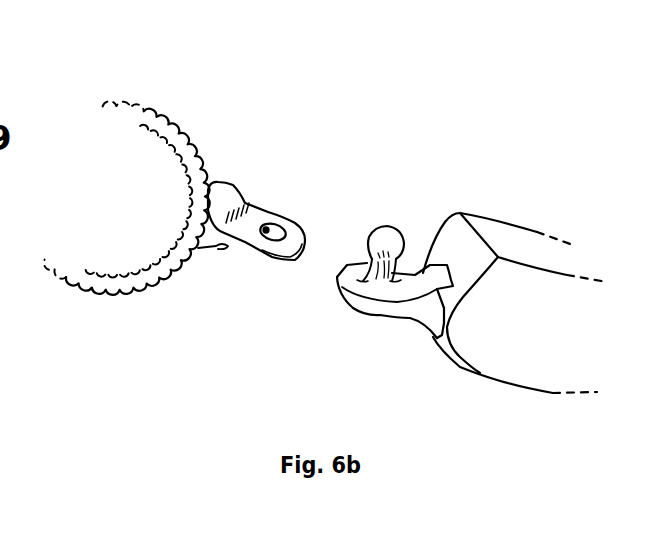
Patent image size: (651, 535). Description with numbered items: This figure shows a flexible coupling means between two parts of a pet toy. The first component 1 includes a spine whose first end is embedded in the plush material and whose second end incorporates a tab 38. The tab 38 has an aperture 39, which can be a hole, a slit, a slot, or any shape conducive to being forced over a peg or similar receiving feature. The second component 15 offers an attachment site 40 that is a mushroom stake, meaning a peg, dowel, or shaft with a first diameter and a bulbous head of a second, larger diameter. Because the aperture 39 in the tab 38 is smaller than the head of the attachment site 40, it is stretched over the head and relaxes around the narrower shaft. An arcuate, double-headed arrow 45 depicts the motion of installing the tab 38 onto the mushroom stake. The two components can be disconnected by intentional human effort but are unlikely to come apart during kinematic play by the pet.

The first component 1 is at (186, 129).
The tab 38 is at (252, 202).
The aperture 39 is at (262, 237).
The attachment site 40 is at (391, 224).
The arcuate double-headed arrow 45 is at (287, 203).
The second component 15 is at (480, 373).